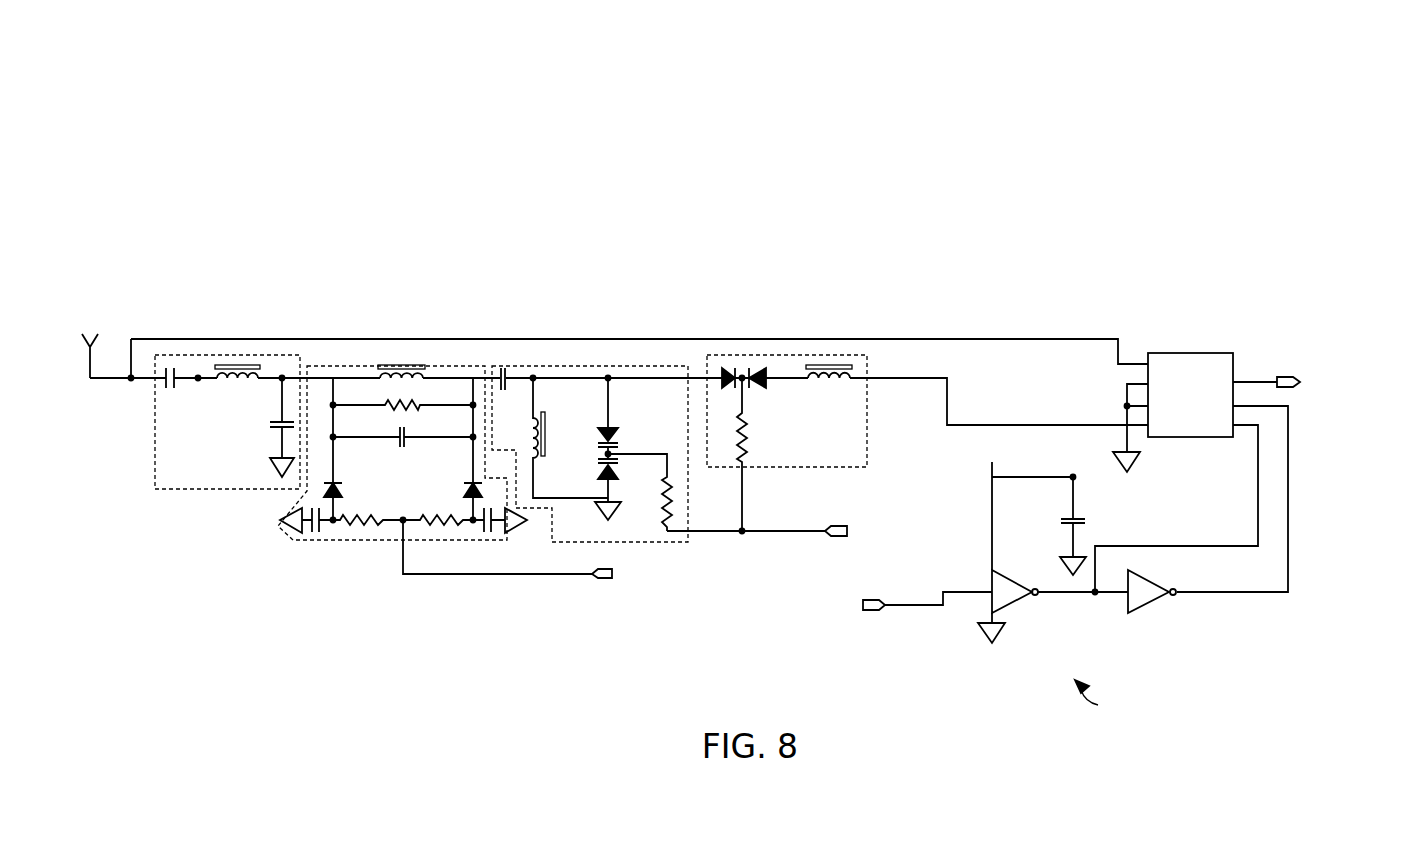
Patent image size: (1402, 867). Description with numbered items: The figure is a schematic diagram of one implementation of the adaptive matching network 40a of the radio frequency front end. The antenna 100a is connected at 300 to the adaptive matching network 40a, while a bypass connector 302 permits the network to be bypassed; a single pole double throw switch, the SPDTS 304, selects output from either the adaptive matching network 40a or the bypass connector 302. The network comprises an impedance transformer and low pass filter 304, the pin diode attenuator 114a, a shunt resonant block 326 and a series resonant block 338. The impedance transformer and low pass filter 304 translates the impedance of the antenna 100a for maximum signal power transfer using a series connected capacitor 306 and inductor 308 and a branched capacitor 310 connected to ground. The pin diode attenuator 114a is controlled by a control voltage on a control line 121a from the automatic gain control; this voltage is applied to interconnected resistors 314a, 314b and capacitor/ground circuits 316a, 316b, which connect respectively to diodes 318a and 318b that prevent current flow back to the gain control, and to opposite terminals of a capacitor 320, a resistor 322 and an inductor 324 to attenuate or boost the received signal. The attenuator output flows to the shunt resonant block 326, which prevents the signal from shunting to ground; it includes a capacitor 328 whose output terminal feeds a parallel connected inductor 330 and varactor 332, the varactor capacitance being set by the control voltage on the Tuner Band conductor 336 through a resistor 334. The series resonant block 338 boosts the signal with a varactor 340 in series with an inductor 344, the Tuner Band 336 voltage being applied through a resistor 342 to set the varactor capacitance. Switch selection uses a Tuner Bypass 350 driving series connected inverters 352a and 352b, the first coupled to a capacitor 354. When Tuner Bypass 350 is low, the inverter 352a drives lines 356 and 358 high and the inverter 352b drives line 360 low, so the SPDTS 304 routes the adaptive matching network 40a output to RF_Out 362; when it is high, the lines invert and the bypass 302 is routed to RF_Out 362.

The antenna 100a is at (90, 337).
The antenna connection point 300 is at (146, 383).
The impedance transformer and low pass filter / single pole double throw switch 304 is at (246, 355).
The capacitor 306 is at (170, 392).
The inductor 308 is at (238, 385).
The branched capacitor 310 is at (275, 428).
The bypass connector 302 is at (392, 340).
The pin diode attenuator 114a is at (433, 362).
The inductor 324 is at (398, 366).
The resistor 322 is at (410, 403).
The capacitor 320 is at (398, 433).
The diode 318a is at (322, 487).
The diode 318b is at (463, 485).
The resistor 314a is at (378, 528).
The resistor 314b is at (455, 515).
The capacitor/ground circuit 316a is at (300, 535).
The capacitor/ground circuit 316b is at (487, 535).
The control line 121a is at (548, 577).
The shunt resonant block 326 is at (593, 362).
The capacitor 328 is at (505, 366).
The inductor 330 is at (548, 440).
The varactor 332 is at (620, 440).
The resistor 334 is at (672, 484).
The Tuner Band conductor 336 is at (760, 530).
The series resonant block 338 is at (745, 353).
The varactor 340 is at (758, 385).
The resistor 342 is at (752, 430).
The inductor 344 is at (835, 368).
The RF_Out 362 is at (1252, 380).
The line 360 is at (1195, 590).
The line 358 is at (1115, 545).
The capacitor 354 is at (1085, 522).
The inverter 352a is at (1012, 600).
The line 356 is at (1070, 594).
The inverter 352b is at (1148, 600).
The Tuner Bypass 350 is at (927, 600).
The adaptive matching network 40a is at (1109, 699).